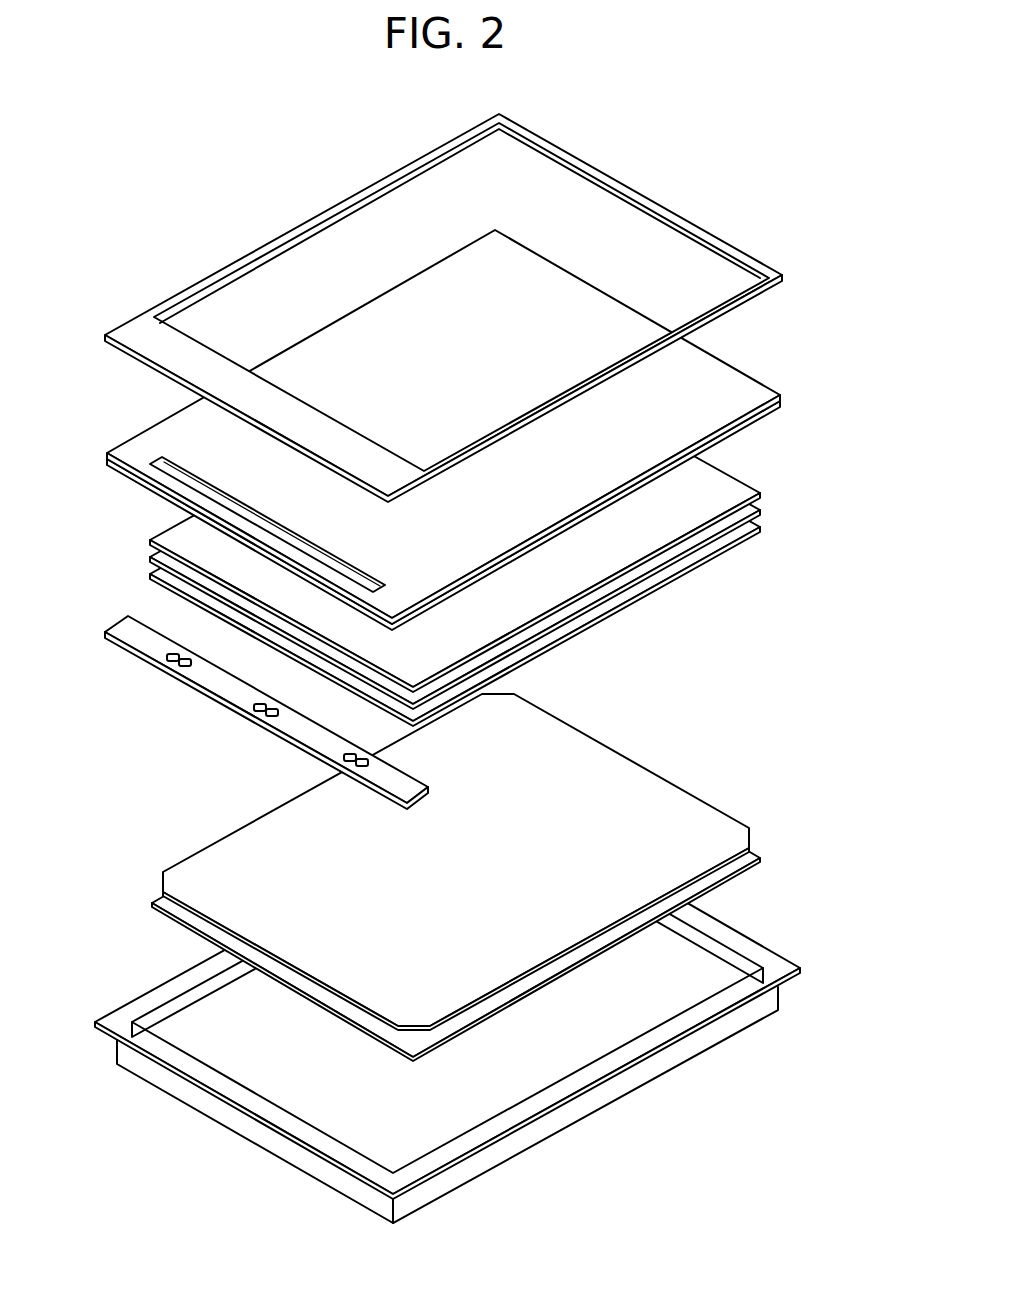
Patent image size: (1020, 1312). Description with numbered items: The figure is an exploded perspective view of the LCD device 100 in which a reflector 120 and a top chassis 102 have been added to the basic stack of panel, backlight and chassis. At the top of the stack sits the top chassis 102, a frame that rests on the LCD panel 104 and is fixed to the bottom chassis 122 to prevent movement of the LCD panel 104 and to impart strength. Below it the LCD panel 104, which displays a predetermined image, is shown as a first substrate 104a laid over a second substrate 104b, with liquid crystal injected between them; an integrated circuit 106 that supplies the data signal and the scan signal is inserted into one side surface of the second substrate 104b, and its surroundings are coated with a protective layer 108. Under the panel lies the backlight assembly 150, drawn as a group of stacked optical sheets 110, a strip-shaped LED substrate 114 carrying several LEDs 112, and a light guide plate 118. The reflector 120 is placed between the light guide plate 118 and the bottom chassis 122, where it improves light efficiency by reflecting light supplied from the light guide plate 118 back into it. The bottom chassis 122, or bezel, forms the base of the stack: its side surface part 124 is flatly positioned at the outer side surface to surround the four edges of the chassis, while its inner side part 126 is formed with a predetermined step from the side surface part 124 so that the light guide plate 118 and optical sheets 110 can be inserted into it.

The LCD device 100 is at (125, 184).
The top chassis 102 is at (640, 197).
The LCD panel 104 is at (456, 430).
The first substrate 104a is at (777, 394).
The second substrate 104b is at (782, 403).
The integrated circuit 106 is at (157, 460).
The protective layer 108 is at (120, 453).
The optical sheets 110 is at (140, 540).
The LEDs 112 is at (335, 745).
The LED substrate 114 is at (233, 712).
The light guide plate 118 is at (180, 861).
The reflector 120 is at (150, 903).
The bottom chassis 122 is at (450, 1009).
The side surface part 124 is at (125, 1017).
The inner side part 126 is at (230, 1053).
The backlight assembly 150 is at (466, 645).